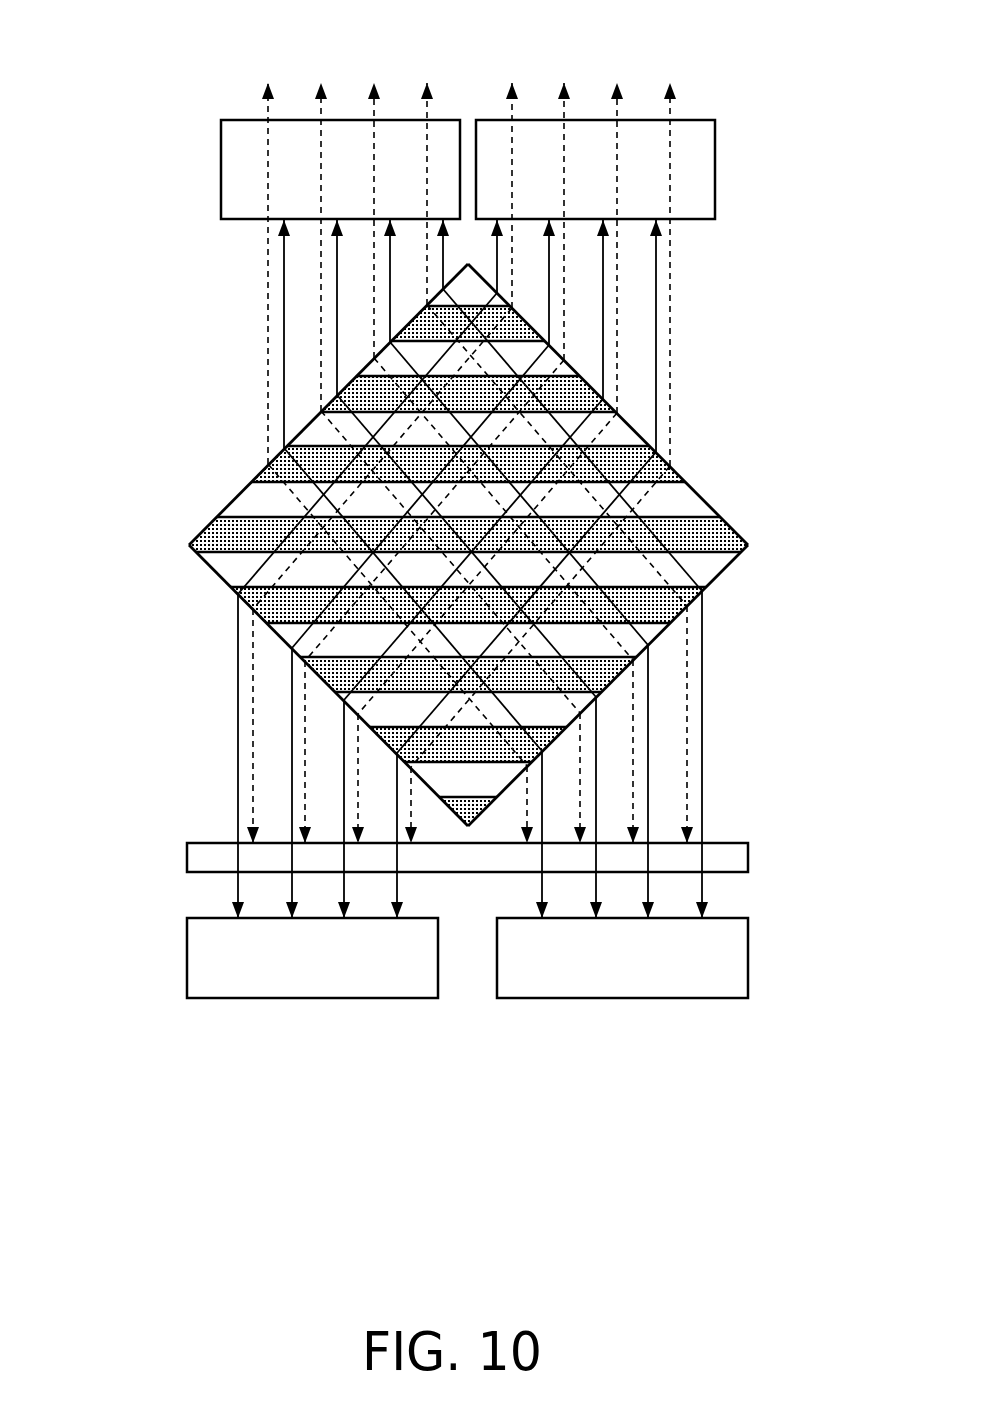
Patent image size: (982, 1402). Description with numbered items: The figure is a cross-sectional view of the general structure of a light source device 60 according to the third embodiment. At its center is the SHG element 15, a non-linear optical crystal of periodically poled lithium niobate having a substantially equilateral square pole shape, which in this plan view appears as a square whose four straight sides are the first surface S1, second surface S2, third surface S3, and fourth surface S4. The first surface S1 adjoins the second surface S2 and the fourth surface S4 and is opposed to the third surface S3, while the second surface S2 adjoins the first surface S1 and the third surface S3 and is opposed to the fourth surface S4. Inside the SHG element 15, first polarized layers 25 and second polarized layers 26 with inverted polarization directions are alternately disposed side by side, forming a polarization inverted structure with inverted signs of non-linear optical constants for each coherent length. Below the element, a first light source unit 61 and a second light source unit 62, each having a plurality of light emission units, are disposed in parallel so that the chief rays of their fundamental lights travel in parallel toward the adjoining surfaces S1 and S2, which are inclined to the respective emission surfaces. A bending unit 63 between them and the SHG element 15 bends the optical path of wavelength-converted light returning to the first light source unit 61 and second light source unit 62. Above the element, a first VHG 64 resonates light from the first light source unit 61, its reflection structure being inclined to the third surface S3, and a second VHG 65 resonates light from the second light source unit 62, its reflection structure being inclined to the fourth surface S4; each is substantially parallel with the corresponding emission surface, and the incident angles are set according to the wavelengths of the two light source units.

The light source device 60 is at (125, 87).
The SHG element 15 is at (210, 618).
The first polarized layers 25 is at (725, 532).
The second polarized layers 26 is at (690, 495).
The first surface S1 is at (213, 572).
The second surface S2 is at (728, 568).
The third surface S3 is at (690, 484).
The fourth surface S4 is at (232, 490).
The first light source unit 61 is at (372, 987).
The second light source unit 62 is at (700, 987).
The bending unit 63 is at (748, 854).
The first VHG 64 is at (715, 166).
The second VHG 65 is at (221, 164).